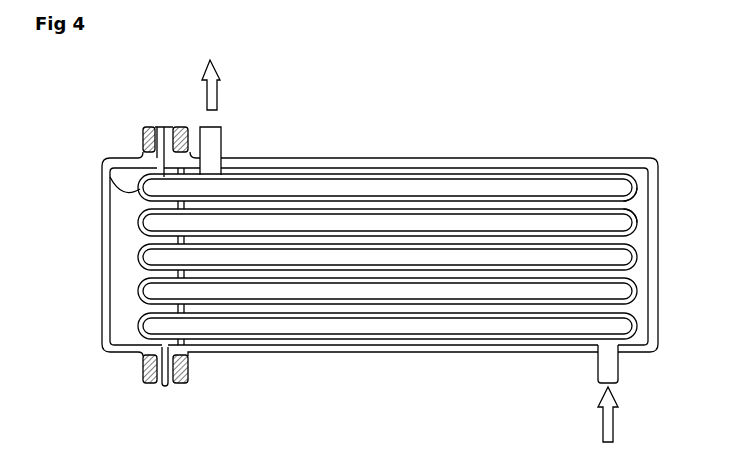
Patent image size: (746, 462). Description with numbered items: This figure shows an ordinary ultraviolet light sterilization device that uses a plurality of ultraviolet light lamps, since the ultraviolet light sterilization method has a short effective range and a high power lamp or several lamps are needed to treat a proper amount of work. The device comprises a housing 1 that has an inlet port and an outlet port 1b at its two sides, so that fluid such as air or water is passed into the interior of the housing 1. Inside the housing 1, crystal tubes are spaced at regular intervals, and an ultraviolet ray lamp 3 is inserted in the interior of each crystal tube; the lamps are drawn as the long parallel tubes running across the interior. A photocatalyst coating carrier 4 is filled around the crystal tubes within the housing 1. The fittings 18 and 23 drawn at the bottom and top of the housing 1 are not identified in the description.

The housing 1 is at (617, 158).
The outlet port 1b is at (221, 133).
The ultraviolet ray lamp 3 is at (538, 186).
The photocatalyst coating carrier 4 is at (640, 198).
The inlet pipe 18 is at (620, 368).
The threaded connection 23 is at (103, 183).